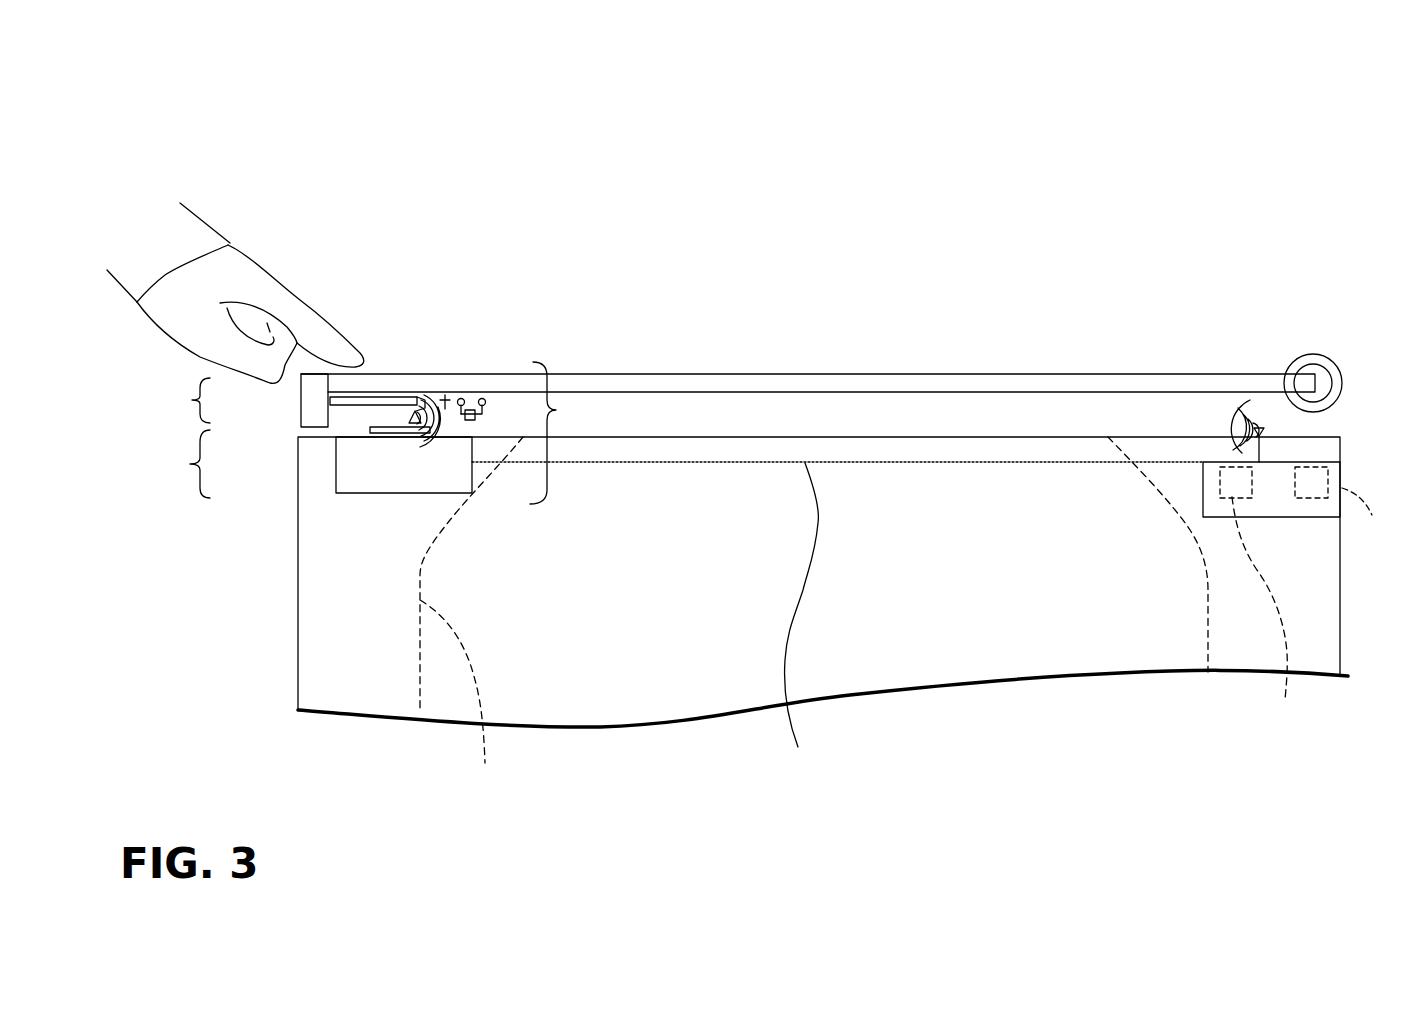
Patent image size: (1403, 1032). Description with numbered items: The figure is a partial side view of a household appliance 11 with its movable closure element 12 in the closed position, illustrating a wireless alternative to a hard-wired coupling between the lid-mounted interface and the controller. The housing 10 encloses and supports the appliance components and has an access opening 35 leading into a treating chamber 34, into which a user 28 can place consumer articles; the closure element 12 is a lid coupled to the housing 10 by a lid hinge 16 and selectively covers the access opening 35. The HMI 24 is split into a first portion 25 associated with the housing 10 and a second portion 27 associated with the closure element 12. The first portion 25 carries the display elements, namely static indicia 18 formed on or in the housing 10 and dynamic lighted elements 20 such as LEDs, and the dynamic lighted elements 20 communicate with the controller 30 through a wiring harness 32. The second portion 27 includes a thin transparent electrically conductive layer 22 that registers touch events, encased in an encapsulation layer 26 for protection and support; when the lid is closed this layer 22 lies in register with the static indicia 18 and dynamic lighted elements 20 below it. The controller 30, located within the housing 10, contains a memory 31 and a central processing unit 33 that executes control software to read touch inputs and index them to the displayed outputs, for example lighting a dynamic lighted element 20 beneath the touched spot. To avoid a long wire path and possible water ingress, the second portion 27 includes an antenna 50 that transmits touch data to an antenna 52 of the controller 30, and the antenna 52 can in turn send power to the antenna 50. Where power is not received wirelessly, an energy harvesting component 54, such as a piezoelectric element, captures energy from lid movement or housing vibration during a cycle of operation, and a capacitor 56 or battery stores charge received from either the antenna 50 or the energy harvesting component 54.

The housing 10 is at (1019, 620).
The household appliance 11 is at (1024, 258).
The movable closure element 12 is at (850, 373).
The lid hinge 16 is at (1322, 355).
The static indicia 18 is at (395, 443).
The dynamic lighted elements 20 is at (398, 487).
The electrically conductive layer 22 is at (363, 397).
The HMI 24 is at (557, 410).
The first portion 25 is at (181, 464).
The encapsulation layer 26 is at (370, 432).
The second portion 27 is at (181, 400).
The user 28 is at (197, 232).
The controller 30 is at (1287, 510).
The memory 31 is at (1265, 614).
The wiring harness 32 is at (804, 622).
The central processing unit 33 is at (1371, 517).
The treating chamber 34 is at (471, 613).
The access opening 35 is at (763, 437).
The antenna 50 is at (427, 400).
The antenna 52 is at (1262, 448).
The energy harvesting component 54 is at (478, 406).
The capacitor 56 is at (457, 398).